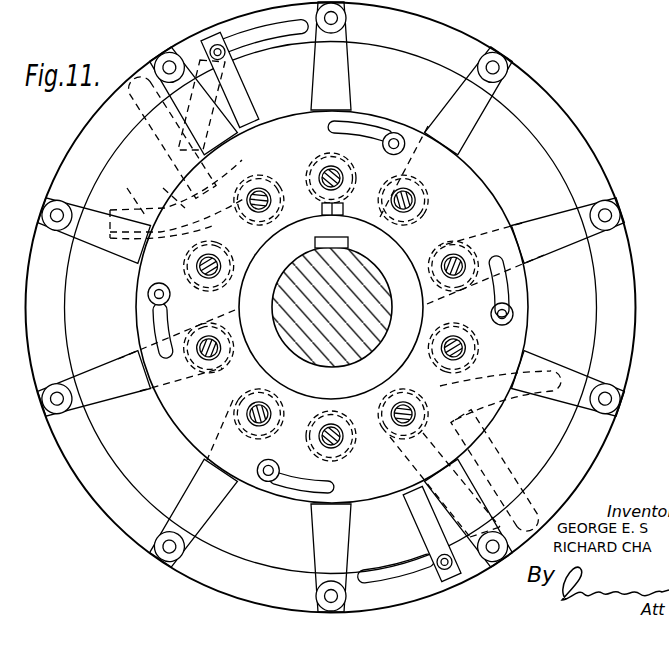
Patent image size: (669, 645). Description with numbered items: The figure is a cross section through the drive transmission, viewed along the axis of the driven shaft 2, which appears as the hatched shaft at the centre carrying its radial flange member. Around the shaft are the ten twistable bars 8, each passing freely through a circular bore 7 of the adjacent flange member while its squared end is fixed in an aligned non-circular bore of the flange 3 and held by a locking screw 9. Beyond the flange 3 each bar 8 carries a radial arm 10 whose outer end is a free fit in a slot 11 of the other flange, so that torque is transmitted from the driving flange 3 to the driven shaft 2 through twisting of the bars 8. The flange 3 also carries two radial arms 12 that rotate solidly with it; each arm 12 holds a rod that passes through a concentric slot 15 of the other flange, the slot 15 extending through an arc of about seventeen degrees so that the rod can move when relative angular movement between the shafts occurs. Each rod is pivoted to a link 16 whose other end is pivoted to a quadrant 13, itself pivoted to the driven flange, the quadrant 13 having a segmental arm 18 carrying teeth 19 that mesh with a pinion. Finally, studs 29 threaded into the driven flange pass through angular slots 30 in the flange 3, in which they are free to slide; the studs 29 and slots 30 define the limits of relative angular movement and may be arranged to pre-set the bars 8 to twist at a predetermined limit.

The driven shaft 2 is at (303, 335).
The radial flange member 3 is at (463, 177).
The bore 7 is at (343, 180).
The twistable bar 8 is at (414, 197).
The locking screw 9 is at (320, 213).
The radial arm 10 is at (338, 77).
The slot 11 is at (508, 67).
The radial arm 12 is at (247, 110).
The quadrant 13 is at (173, 127).
The slot 15 is at (277, 35).
The link 16 is at (248, 130).
The segmental arm 18 is at (177, 199).
The teeth 19 is at (165, 190).
The stud 29 is at (420, 133).
The angular slot 30 is at (372, 133).